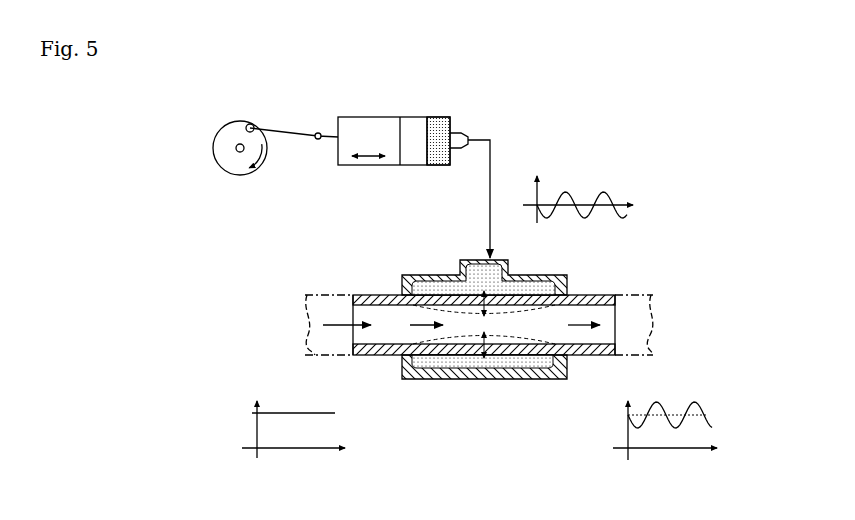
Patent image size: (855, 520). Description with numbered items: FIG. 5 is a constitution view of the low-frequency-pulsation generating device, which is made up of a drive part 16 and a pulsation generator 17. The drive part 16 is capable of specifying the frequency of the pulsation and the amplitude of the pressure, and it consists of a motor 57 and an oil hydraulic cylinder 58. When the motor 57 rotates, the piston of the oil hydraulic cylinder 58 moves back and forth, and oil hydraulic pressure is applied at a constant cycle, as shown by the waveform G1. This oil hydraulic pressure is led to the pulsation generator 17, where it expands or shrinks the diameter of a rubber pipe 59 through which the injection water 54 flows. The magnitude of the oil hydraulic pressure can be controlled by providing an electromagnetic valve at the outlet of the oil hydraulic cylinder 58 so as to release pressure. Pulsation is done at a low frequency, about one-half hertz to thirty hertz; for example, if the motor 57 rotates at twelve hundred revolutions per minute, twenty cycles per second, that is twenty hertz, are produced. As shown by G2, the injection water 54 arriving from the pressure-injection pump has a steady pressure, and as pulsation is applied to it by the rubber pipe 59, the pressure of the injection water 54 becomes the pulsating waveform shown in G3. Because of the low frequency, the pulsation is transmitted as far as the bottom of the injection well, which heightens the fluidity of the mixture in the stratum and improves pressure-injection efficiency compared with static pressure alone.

The drive part 16 is at (368, 160).
The pulsation generator 17 is at (606, 272).
The injection water 54 is at (333, 321).
The motor 57 is at (246, 122).
The oil hydraulic cylinder 58 is at (382, 117).
The rubber pipe 59 is at (381, 295).
The oil hydraulic pressure waveform G1 is at (595, 177).
The injection water pressure waveform before pulsation G2 is at (304, 405).
The pulsated injection water pressure waveform G3 is at (691, 393).